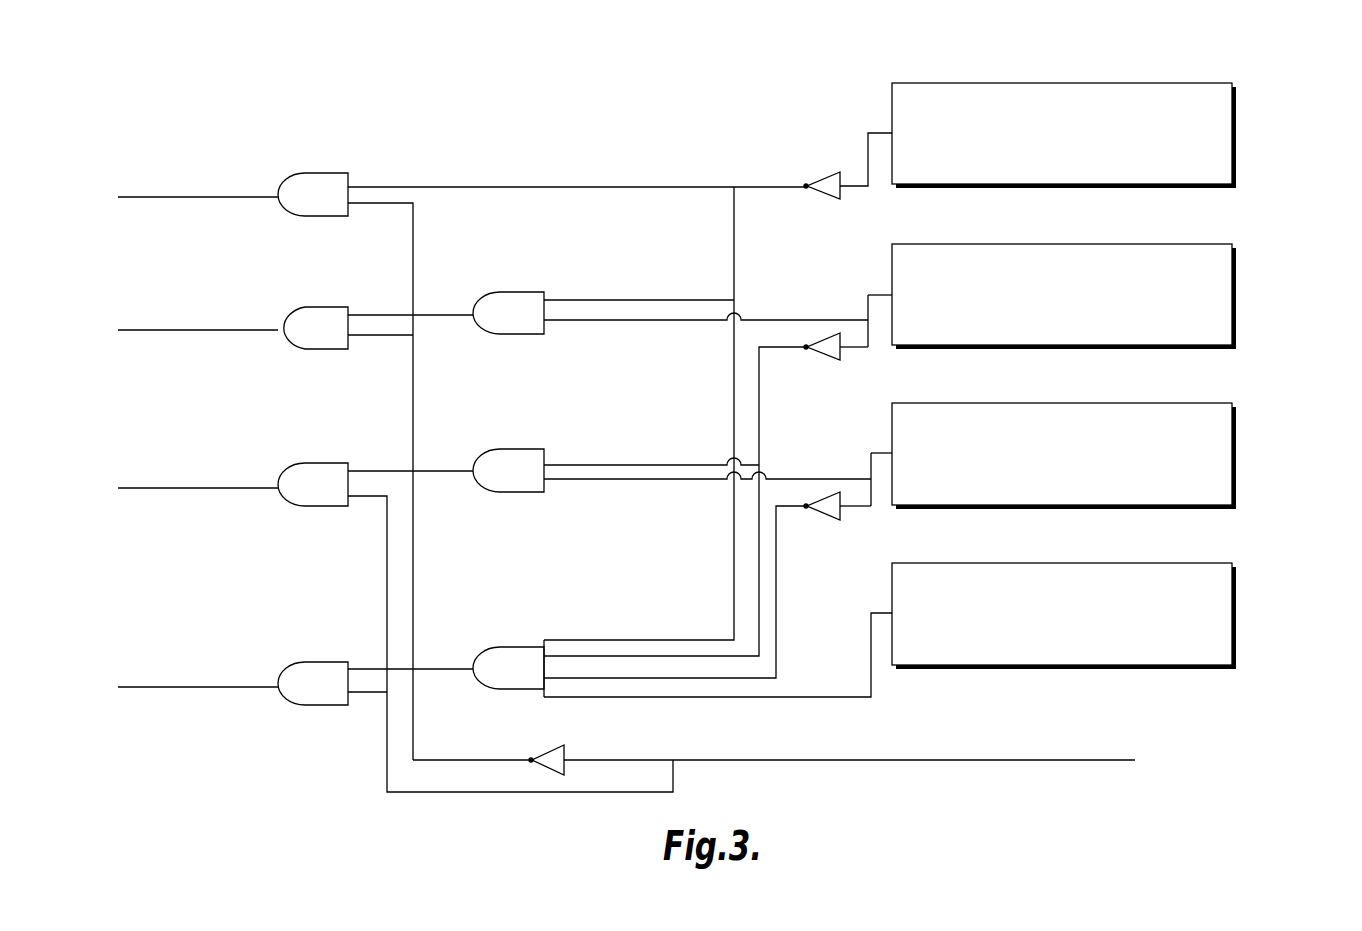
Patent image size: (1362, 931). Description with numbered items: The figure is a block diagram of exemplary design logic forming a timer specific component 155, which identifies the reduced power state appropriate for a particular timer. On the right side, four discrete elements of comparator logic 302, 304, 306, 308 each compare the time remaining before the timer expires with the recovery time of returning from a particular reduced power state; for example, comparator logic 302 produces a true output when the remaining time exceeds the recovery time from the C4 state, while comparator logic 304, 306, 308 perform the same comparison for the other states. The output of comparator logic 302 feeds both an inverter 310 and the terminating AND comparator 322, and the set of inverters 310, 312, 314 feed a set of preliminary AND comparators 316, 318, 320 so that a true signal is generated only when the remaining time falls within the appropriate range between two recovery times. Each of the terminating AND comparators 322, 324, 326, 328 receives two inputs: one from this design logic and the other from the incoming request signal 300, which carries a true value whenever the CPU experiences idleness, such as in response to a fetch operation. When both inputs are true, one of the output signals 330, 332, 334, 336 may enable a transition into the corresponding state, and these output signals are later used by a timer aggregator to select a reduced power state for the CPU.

The timer specific component 155 is at (228, 86).
The incoming request signal 300 is at (1135, 760).
The comparator logic 302 is at (1236, 133).
The comparator logic 304 is at (1236, 295).
The comparator logic 306 is at (1236, 413).
The comparator logic 308 is at (1236, 578).
The inverter 310 is at (806, 195).
The inverter 312 is at (811, 354).
The inverter 314 is at (811, 513).
The preliminary AND comparator 316 is at (482, 304).
The preliminary AND comparator 318 is at (486, 458).
The preliminary AND comparator 320 is at (482, 650).
The terminating AND comparator 322 is at (313, 174).
The terminating AND comparator 324 is at (310, 308).
The terminating AND comparator 326 is at (288, 472).
The terminating AND comparator 328 is at (288, 669).
The output signal 330 is at (153, 197).
The output signal 332 is at (153, 330).
The output signal 334 is at (153, 488).
The output signal 336 is at (162, 687).